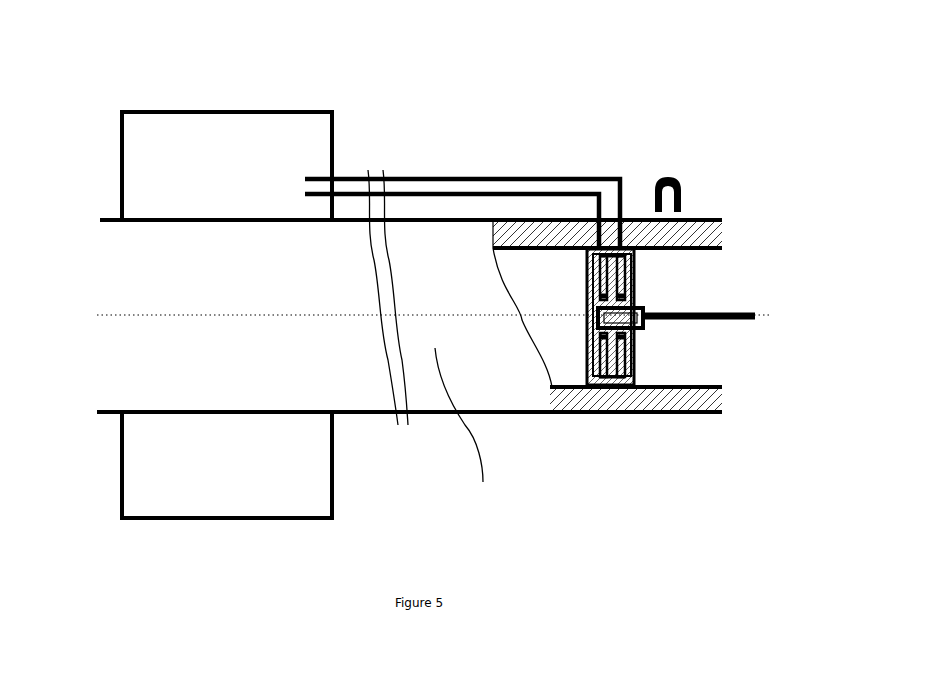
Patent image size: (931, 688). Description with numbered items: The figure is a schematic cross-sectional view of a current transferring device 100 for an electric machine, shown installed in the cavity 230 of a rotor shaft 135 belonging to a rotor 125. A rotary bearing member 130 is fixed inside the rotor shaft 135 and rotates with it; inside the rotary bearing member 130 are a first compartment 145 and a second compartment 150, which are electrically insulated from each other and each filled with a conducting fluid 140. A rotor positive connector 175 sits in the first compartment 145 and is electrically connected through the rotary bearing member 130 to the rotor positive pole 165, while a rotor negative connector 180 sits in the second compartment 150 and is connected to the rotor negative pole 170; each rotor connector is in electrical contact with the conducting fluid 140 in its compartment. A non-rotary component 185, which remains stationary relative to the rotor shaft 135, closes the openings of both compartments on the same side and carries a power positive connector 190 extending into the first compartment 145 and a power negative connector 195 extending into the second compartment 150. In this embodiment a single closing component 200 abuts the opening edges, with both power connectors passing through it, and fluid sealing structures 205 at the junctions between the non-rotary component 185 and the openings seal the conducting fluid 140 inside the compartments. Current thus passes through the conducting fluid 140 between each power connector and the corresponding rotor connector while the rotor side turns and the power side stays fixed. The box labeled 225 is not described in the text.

The current transferring device 100 is at (638, 189).
The rotor 125 is at (386, 112).
The rotary bearing member 130 is at (637, 252).
The rotor shaft 135 is at (309, 433).
The conducting fluid 140 is at (596, 434).
The first compartment 145 is at (628, 385).
The second compartment 150 is at (603, 380).
The rotor positive pole 165 is at (305, 179).
The rotor negative pole 170 is at (305, 194).
The rotor positive connector 175 is at (637, 262).
The rotor negative connector 180 is at (587, 260).
The non-rotary component 185 is at (722, 388).
The power positive connector 190 is at (635, 303).
The power negative connector 195 is at (552, 388).
The closing component 200 is at (668, 342).
The fluid sealing structure 205 is at (640, 328).
The housing 225 is at (162, 200).
The cavity 230 is at (557, 336).